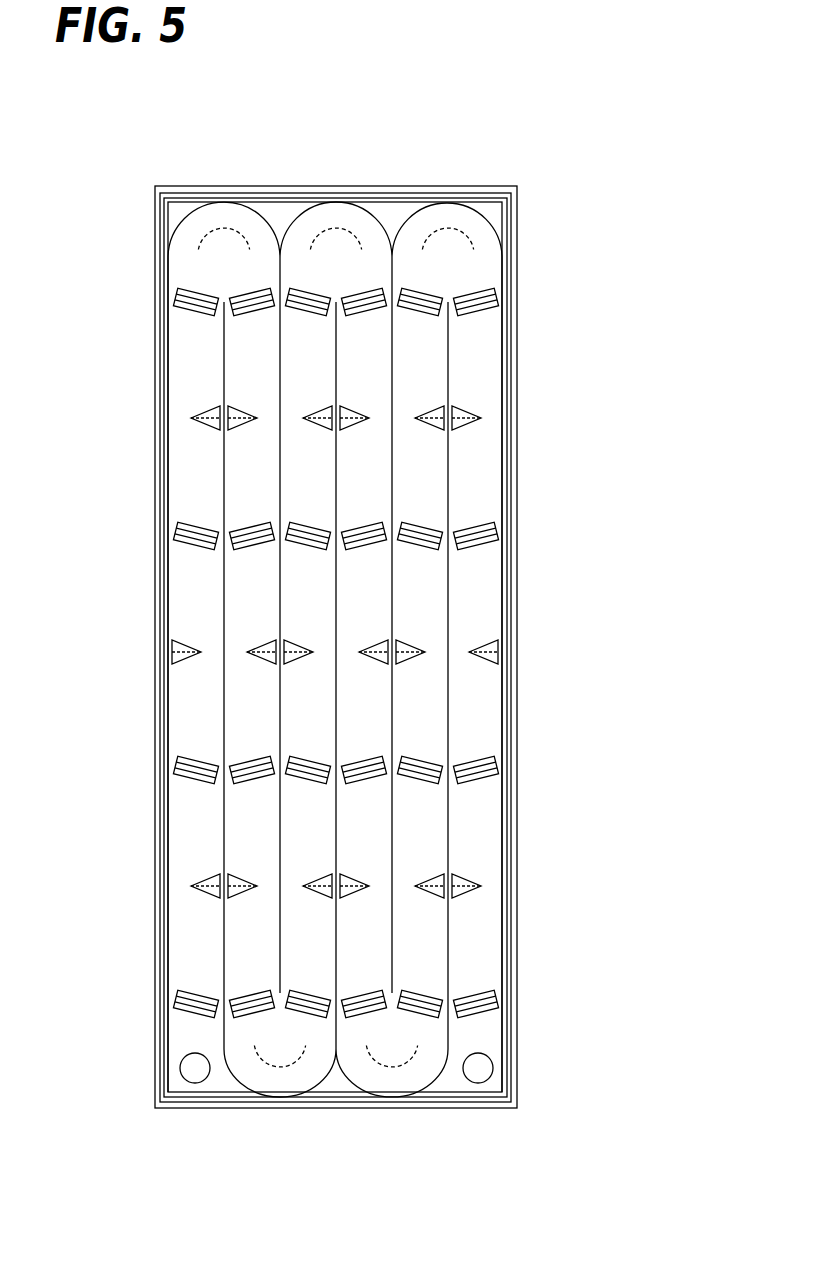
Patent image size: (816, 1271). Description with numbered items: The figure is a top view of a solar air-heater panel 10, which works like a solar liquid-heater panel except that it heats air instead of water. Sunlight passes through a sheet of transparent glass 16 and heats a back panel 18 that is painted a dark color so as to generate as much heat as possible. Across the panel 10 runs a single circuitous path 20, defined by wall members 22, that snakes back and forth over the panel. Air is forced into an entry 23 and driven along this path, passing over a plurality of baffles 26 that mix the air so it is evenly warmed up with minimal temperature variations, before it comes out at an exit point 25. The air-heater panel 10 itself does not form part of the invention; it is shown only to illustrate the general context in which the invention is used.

The solar air-heater panel 10 is at (560, 438).
The sheet of transparent glass 16 is at (478, 612).
The back panel 18 is at (272, 845).
The circuitous path 20 is at (184, 342).
The wall members 22 is at (223, 375).
The entry 23 is at (195, 1072).
The exit point 25 is at (478, 1068).
The baffles 26 is at (197, 420).